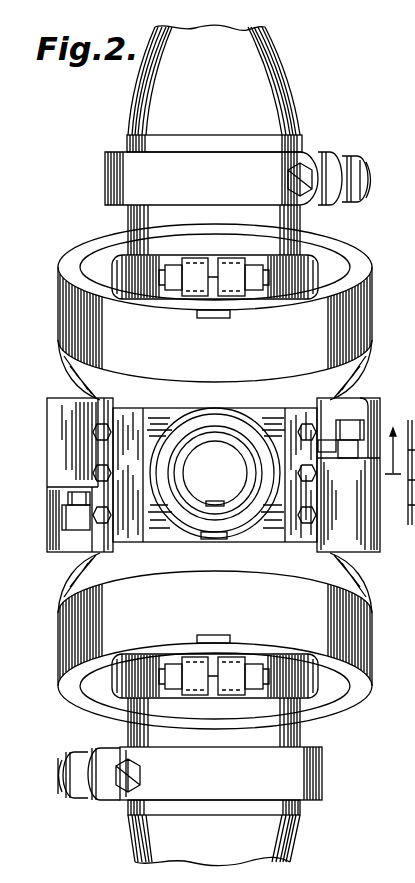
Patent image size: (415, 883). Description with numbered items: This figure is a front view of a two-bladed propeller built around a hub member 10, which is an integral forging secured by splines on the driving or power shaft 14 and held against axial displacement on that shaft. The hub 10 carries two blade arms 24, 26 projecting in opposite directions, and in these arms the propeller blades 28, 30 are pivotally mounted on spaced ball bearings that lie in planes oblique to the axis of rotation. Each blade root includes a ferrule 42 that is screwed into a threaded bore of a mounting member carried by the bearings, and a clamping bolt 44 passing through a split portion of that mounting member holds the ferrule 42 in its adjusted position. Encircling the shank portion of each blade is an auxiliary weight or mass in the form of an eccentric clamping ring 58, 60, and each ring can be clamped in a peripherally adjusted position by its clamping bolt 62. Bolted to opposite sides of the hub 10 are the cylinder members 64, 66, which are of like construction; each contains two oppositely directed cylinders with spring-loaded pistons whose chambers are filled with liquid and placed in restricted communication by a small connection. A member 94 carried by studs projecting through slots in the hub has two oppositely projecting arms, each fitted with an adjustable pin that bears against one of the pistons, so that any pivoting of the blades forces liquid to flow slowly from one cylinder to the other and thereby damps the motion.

The hub member 10 is at (370, 362).
The driving or power shaft 14 is at (190, 497).
The blade arm 24 is at (392, 642).
The blade arm 26 is at (373, 289).
The propeller blade 28 is at (284, 846).
The propeller blade 30 is at (279, 47).
The ferrule 42 is at (296, 272).
The clamping bolt 44 is at (215, 258).
The eccentric clamping ring 58 is at (318, 776).
The eccentric clamping ring 60 is at (262, 170).
The clamping bolt 62 is at (306, 166).
The cylinder member 64 is at (362, 553).
The cylinder member 66 is at (58, 398).
The member with oppositely projecting arms 94 is at (335, 447).